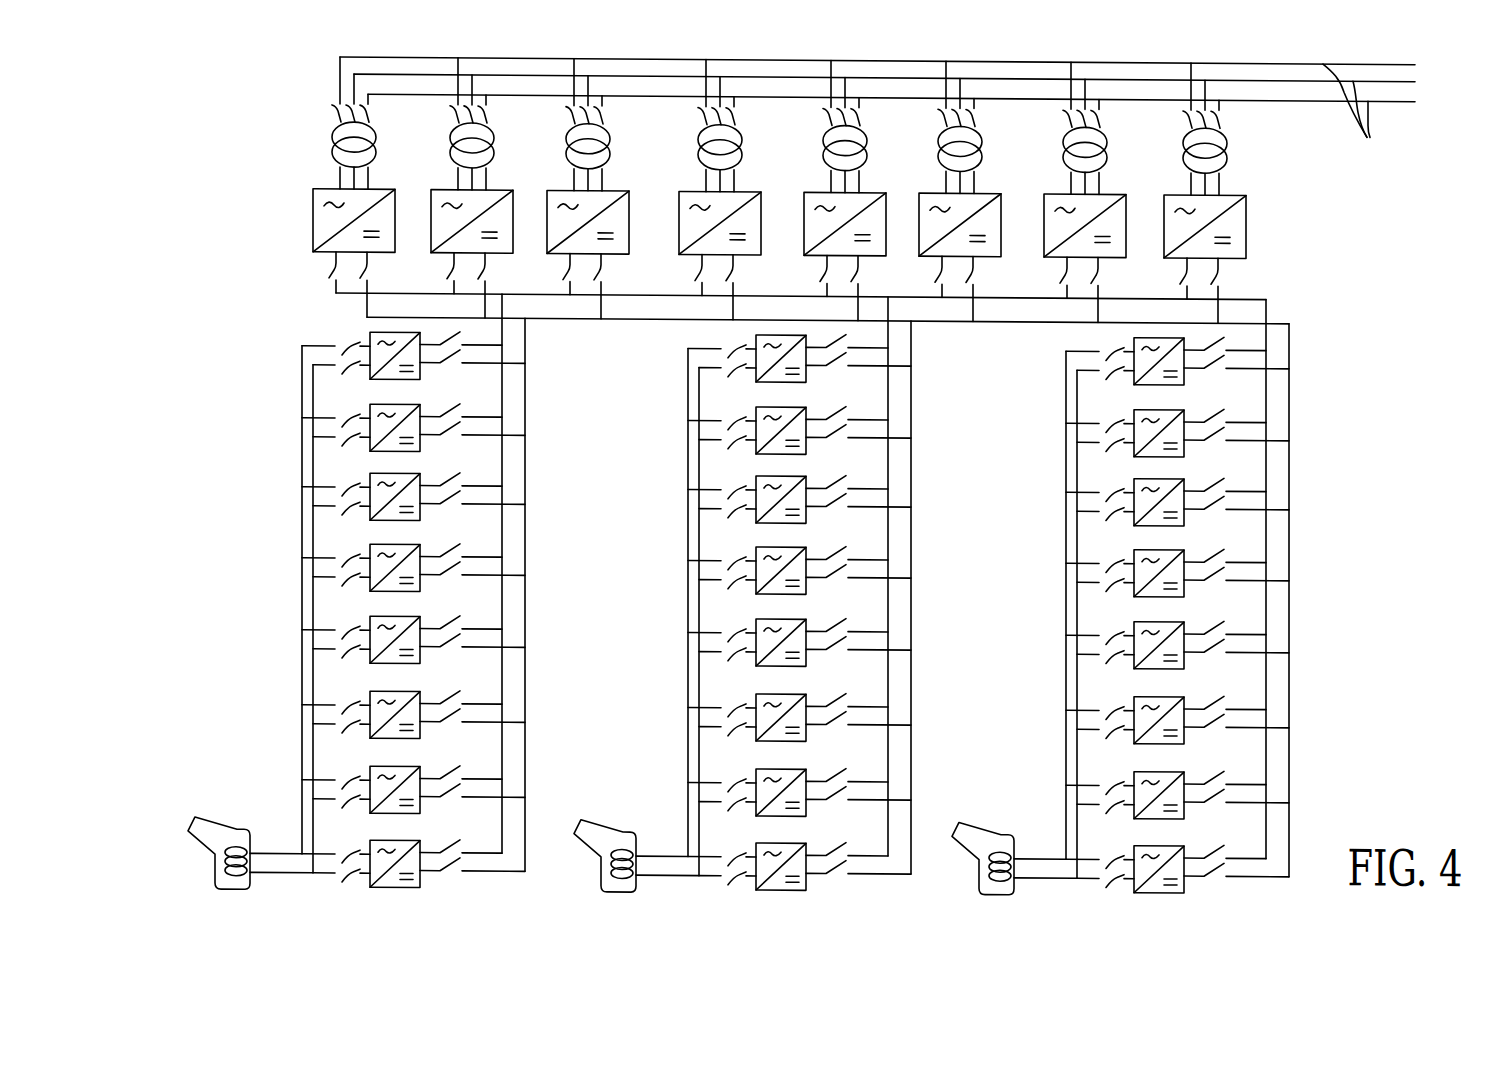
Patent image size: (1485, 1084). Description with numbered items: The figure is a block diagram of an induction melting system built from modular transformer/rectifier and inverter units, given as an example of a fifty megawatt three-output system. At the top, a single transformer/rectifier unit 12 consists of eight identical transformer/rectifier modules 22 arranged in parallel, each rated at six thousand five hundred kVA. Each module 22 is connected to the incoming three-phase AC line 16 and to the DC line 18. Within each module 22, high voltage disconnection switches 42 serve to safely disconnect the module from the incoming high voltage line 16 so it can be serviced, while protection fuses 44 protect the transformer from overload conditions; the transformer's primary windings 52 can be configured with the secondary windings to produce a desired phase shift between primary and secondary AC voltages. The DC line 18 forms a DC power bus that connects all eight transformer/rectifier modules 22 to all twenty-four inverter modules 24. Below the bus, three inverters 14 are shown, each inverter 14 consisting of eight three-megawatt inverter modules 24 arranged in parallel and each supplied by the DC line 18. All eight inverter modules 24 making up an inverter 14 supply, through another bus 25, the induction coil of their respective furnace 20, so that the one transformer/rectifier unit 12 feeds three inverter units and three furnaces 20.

The transformer/rectifier unit 12 is at (1268, 211).
The inverter 14 is at (738, 594).
The incoming 3-phase AC line 16 is at (877, 105).
The DC line 18 is at (1282, 295).
The furnace 20 is at (240, 838).
The transformer/rectifier module 22 is at (313, 222).
The inverter module 24 is at (400, 691).
The bus 25 is at (302, 692).
The high voltage disconnection switches 42 is at (1218, 110).
The protection fuses 44 is at (338, 157).
The primary windings 52 is at (332, 266).